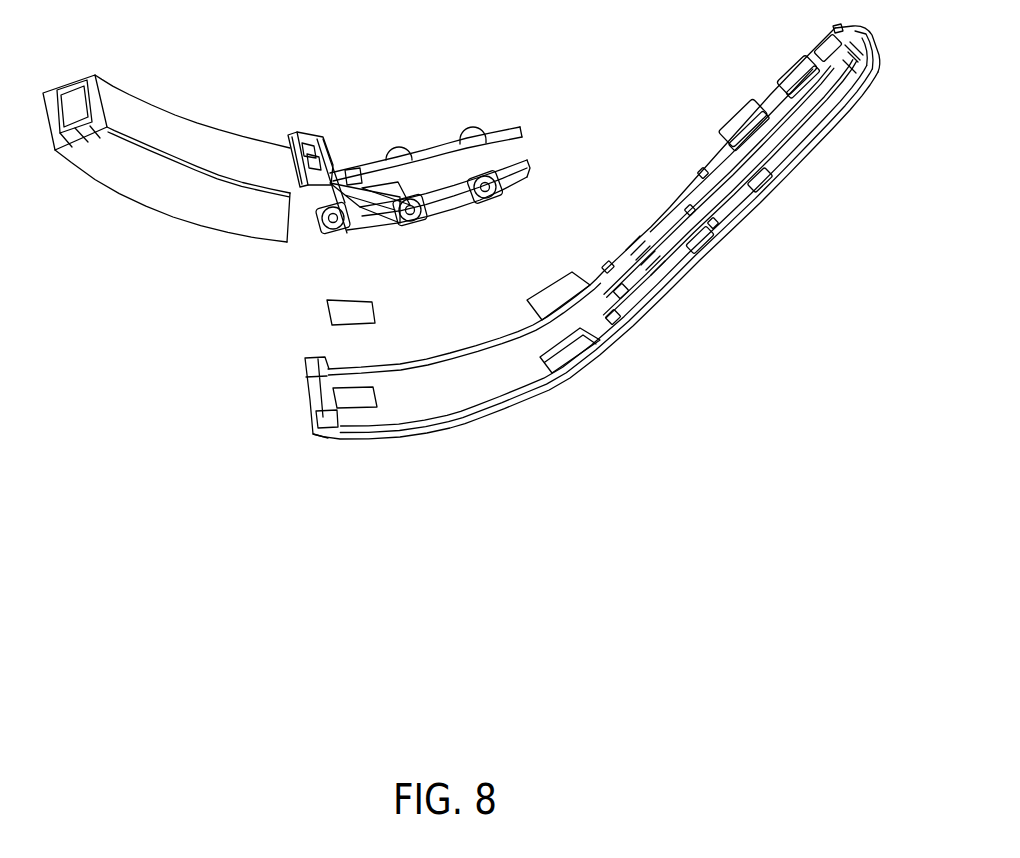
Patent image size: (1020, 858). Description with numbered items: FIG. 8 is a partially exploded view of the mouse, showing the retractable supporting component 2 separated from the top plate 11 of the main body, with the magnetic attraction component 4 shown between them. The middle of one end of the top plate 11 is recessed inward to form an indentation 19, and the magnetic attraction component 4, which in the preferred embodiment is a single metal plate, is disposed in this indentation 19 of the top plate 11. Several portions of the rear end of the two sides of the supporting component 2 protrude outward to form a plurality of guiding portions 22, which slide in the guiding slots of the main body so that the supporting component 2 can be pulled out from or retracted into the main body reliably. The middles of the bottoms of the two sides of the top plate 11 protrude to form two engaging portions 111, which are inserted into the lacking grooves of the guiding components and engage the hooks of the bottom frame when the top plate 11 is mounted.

The retractable supporting component 2 is at (162, 205).
The magnetic attraction component 4 is at (337, 310).
The top plate 11 is at (397, 437).
The engaging portions 111 is at (530, 388).
The indentation 19 is at (343, 403).
The guiding portions 22 is at (340, 223).